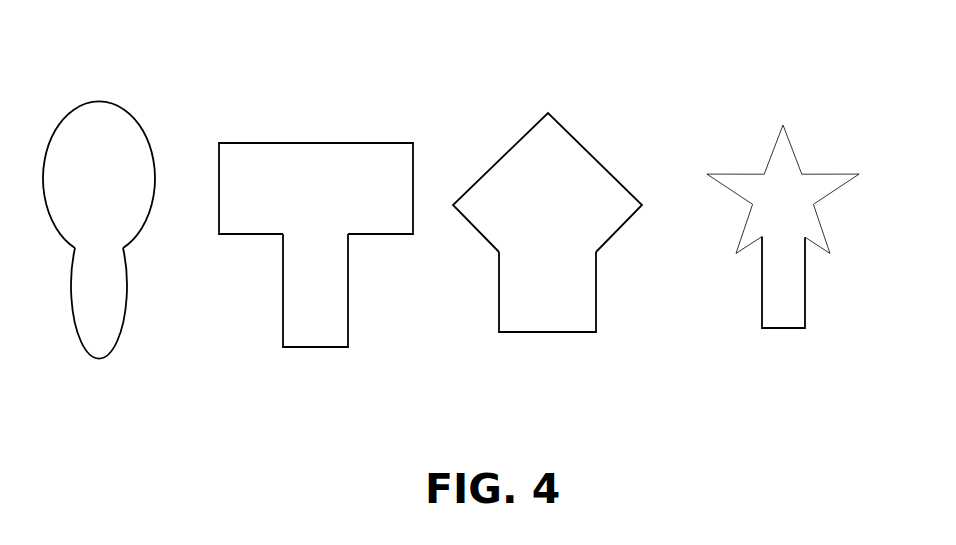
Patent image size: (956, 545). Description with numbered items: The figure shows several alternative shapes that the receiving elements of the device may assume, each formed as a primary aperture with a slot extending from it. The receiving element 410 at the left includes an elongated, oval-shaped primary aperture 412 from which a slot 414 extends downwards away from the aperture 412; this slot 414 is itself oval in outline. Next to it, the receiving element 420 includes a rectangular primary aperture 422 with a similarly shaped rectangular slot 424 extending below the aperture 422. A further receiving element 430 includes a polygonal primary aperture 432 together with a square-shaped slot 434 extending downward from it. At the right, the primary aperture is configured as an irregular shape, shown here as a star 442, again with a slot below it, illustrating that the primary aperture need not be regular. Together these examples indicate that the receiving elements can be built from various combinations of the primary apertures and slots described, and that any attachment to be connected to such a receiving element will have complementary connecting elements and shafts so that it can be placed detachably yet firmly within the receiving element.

The receiving element 410 is at (470, 216).
The primary aperture 412 is at (147, 220).
The slot 414 is at (105, 358).
The receiving element 420 is at (331, 210).
The primary aperture 422 is at (377, 234).
The slot 424 is at (348, 347).
The receiving element 430 is at (569, 205).
The primary aperture 432 is at (615, 232).
The slot 434 is at (568, 332).
The star 442 is at (813, 205).